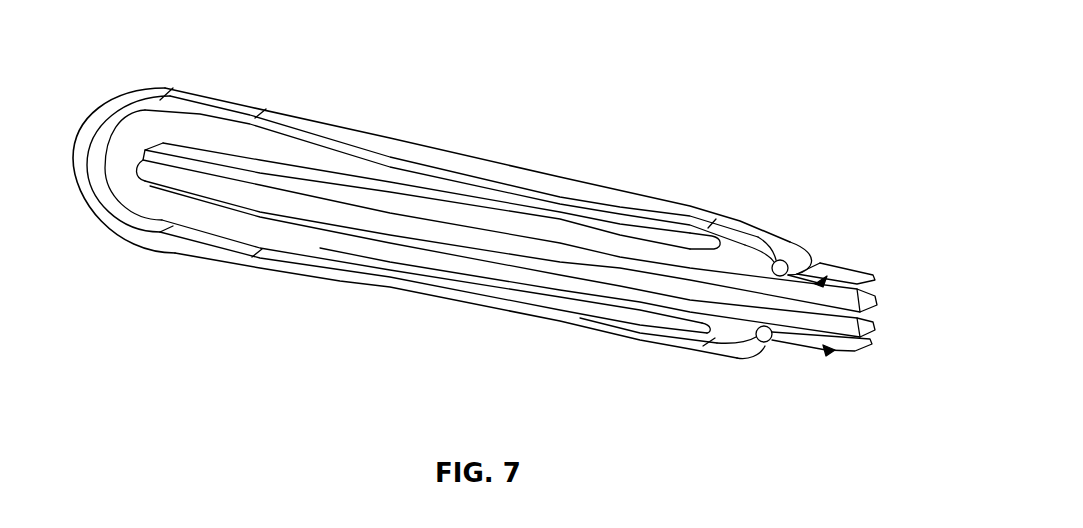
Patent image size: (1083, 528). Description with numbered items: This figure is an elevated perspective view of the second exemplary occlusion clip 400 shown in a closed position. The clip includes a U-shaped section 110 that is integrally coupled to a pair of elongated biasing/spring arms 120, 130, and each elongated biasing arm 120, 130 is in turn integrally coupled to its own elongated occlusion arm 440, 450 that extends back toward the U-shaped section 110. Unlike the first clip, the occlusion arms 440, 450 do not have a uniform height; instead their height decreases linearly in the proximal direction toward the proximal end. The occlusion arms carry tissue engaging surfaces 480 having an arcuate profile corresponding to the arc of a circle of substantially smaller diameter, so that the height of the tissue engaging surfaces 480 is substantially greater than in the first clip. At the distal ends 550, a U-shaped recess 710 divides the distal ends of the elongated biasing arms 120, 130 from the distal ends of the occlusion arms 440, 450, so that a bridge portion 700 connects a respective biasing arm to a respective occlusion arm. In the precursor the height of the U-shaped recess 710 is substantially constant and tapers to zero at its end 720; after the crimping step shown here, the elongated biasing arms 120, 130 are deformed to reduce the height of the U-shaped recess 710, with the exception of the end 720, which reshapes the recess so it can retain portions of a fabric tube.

The second exemplary occlusion clip 400 is at (836, 84).
The U-shaped section 110 is at (84, 178).
The first elongated biasing arm 120 is at (318, 124).
The second elongated biasing arm 130 is at (383, 288).
The first occlusion arm 440 is at (507, 221).
The second occlusion arm 450 is at (563, 282).
The tissue engaging surfaces 480 is at (596, 255).
The distal ends 550 is at (868, 280).
The bridge portion 700 is at (743, 258).
The U-shaped recess 710 is at (820, 278).
The distal end of U-shaped recess 720 is at (768, 264).